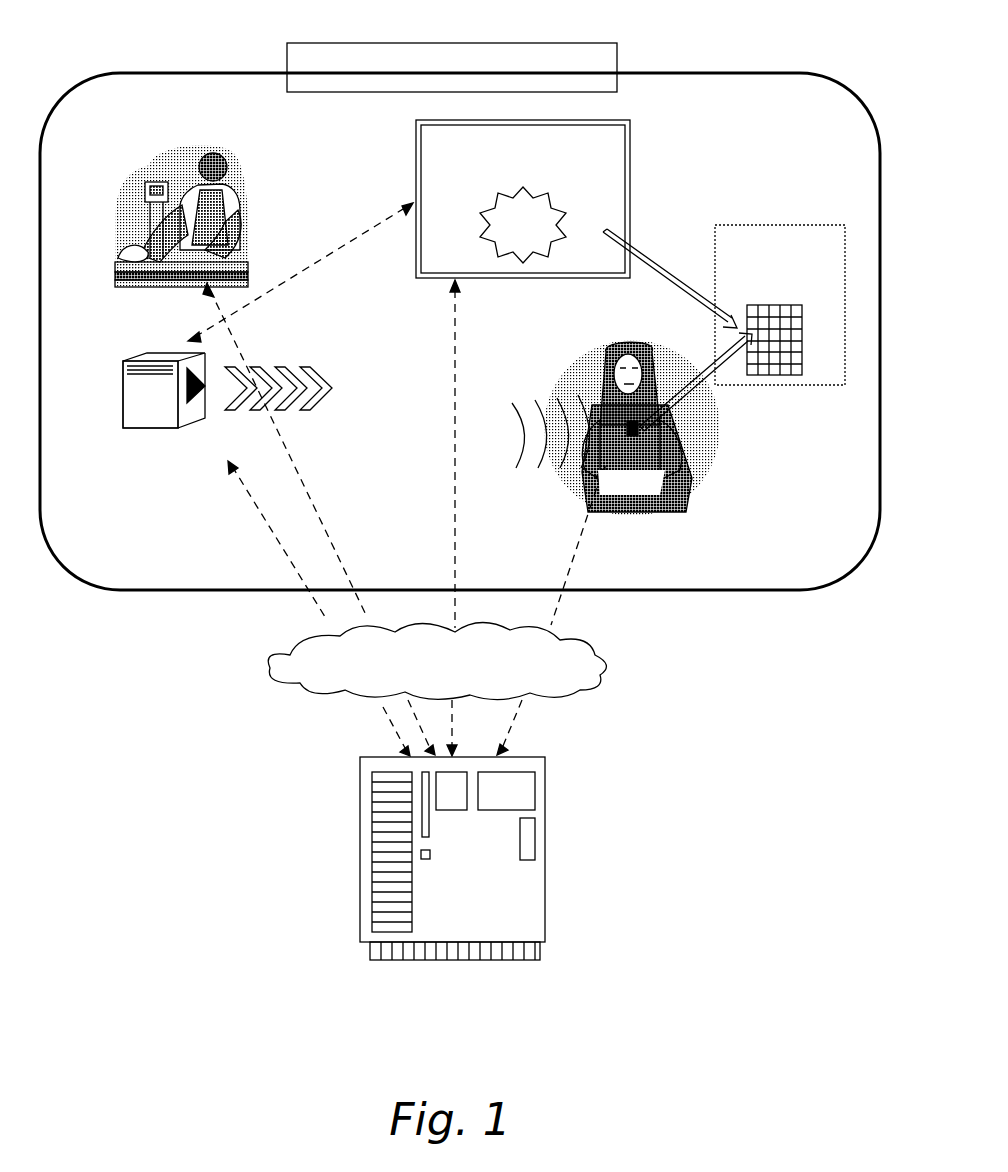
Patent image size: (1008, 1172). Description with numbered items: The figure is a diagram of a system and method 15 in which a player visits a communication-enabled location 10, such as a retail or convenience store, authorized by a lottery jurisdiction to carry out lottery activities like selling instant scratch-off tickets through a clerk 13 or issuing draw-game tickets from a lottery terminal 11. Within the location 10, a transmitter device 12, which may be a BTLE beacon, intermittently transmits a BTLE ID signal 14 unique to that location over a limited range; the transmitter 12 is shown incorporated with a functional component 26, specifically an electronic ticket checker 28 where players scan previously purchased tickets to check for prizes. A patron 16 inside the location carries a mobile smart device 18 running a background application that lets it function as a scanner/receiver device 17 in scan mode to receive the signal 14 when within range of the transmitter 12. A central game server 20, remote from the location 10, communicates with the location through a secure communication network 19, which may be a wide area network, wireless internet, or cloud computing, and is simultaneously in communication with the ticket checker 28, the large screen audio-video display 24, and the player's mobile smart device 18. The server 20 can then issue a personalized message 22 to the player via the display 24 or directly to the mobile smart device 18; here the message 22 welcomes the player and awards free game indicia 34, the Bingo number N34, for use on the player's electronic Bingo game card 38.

The location 10 is at (287, 69).
The system and method 15 is at (745, 74).
The lottery terminal 11 is at (150, 200).
The clerk 13 is at (243, 217).
The functional component 26 is at (122, 358).
The electronic ticket checker 28 is at (132, 415).
The transmitter device 12 is at (203, 392).
The BTLE ID signal 14 is at (300, 410).
The personalized message 22 is at (436, 168).
The audio-video display 24 is at (631, 162).
The free game indicia 34 is at (497, 220).
The electronic Bingo game card 38 is at (777, 378).
The patron 16 is at (650, 500).
The scanner/receiver device 17 is at (600, 386).
The mobile smart device 18 is at (641, 430).
The secure communication network 19 is at (578, 672).
The central game server 20 is at (546, 876).